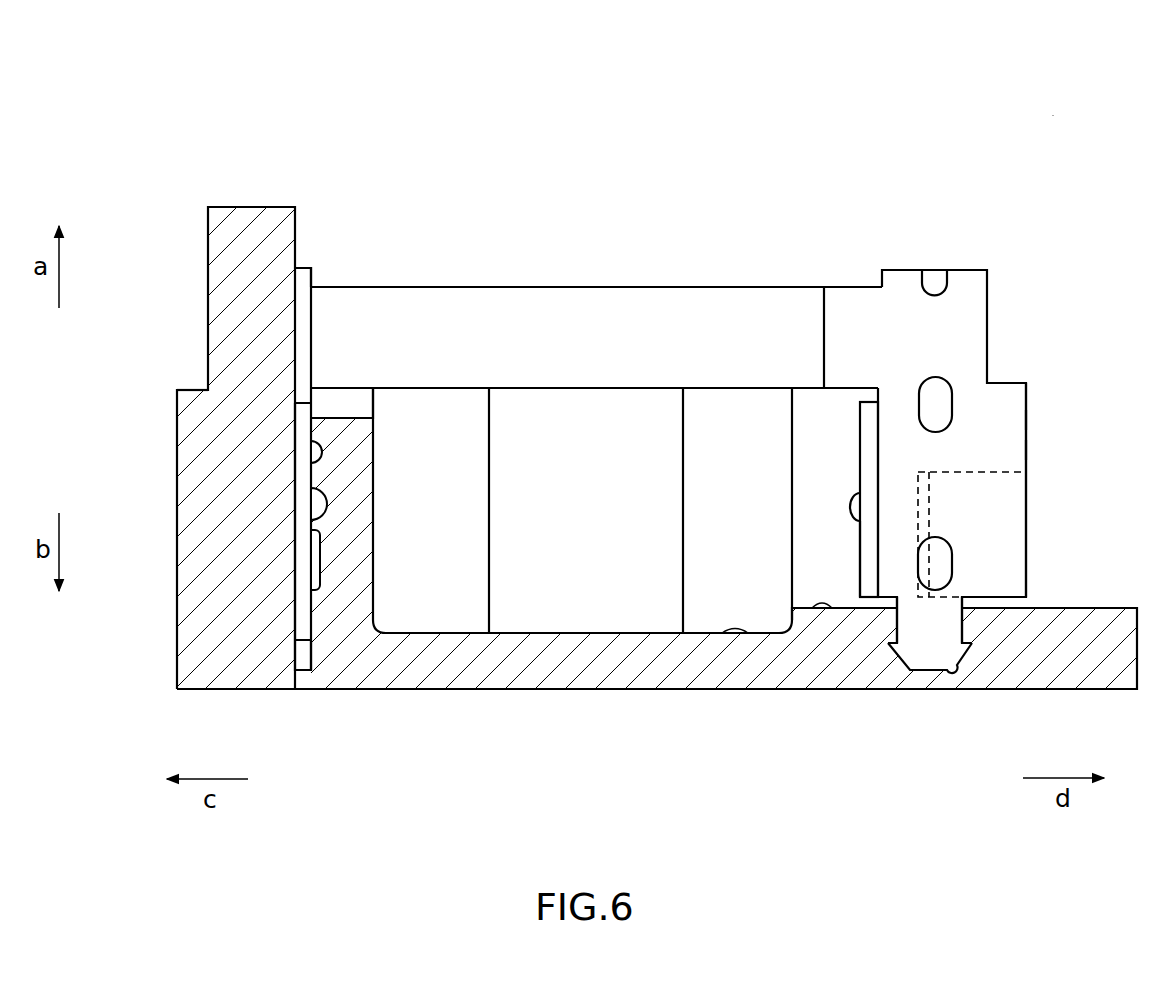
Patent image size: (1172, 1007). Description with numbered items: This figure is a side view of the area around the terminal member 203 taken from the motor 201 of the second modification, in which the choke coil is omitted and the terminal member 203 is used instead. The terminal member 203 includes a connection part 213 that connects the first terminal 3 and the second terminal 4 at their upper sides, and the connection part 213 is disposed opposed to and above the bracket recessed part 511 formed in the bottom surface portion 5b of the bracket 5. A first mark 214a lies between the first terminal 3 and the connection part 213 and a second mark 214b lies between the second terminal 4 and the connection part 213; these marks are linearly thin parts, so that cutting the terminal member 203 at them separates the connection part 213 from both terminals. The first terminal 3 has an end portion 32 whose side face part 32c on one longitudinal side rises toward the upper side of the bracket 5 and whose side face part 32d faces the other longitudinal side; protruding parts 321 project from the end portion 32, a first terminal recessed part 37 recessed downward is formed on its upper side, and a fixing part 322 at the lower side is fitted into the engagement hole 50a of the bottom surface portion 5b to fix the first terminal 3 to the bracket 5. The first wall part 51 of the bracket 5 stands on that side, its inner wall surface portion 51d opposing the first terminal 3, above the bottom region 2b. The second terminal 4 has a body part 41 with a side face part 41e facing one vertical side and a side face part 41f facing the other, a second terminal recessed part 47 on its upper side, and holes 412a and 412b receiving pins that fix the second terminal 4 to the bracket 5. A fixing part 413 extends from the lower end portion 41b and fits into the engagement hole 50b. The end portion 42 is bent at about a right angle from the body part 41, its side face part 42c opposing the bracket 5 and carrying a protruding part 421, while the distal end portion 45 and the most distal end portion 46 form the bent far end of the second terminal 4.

The motor 201 is at (1055, 110).
The bracket 5 is at (224, 196).
The first wall part 51 is at (208, 247).
The inner wall surface portion 51d is at (300, 350).
The engagement hole 50a is at (312, 672).
The bottom surface portion 5b is at (825, 608).
The bracket recessed part 511 is at (735, 633).
The engagement hole 50b is at (955, 662).
The first terminal 3 is at (260, 412).
The end portion 32 is at (304, 256).
The first terminal recessed part 37 is at (312, 270).
The side face part 32d is at (312, 445).
The side face part 32c is at (293, 482).
The protruding parts 321 is at (313, 557).
The fixing part 322 is at (293, 653).
The terminal member 203 is at (596, 470).
The connection part 213 is at (617, 325).
The mark 214a is at (312, 312).
The mark 214b is at (823, 340).
The bottom surface 2b is at (602, 633).
The second terminal 4 is at (957, 477).
The second terminal recessed part 47 is at (935, 285).
The body part 41 is at (1027, 393).
The side face part 41e is at (1027, 420).
The side face part 41f is at (1027, 450).
The lower end portion 41b is at (1008, 600).
The hole 412b is at (948, 412).
The hole 412a is at (945, 570).
The most distal end portion 46 is at (929, 492).
The distal end portion 45 is at (960, 522).
The end portion 42 is at (862, 435).
The side face part 42c is at (855, 490).
The protruding part 421 is at (858, 517).
The fixing part 413 is at (913, 648).